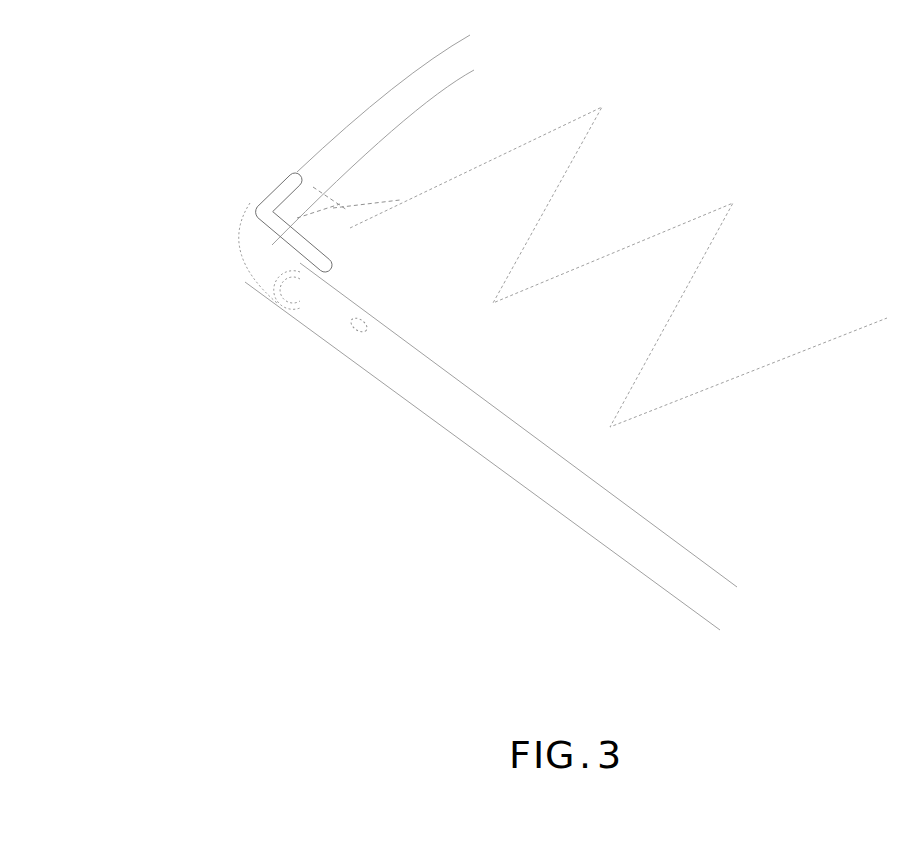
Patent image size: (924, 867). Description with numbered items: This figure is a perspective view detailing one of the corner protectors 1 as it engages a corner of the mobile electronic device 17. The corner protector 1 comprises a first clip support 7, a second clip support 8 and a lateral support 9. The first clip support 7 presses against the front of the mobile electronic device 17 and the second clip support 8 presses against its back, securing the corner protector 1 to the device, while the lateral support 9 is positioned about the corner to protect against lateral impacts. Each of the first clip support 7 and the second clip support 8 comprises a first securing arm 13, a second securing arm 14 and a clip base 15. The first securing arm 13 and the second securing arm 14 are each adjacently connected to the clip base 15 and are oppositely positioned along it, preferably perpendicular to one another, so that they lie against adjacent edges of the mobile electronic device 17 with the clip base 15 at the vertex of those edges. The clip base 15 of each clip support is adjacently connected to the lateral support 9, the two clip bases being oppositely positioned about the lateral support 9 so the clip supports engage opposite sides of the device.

The corner protector 1 is at (103, 173).
The first clip support 7 is at (266, 86).
The second clip support 8 is at (437, 230).
The lateral support 9 is at (258, 263).
The first securing arm 13 is at (286, 179).
The second securing arm 14 is at (355, 323).
The clip base 15 is at (256, 216).
The mobile electronic device 17 is at (518, 465).